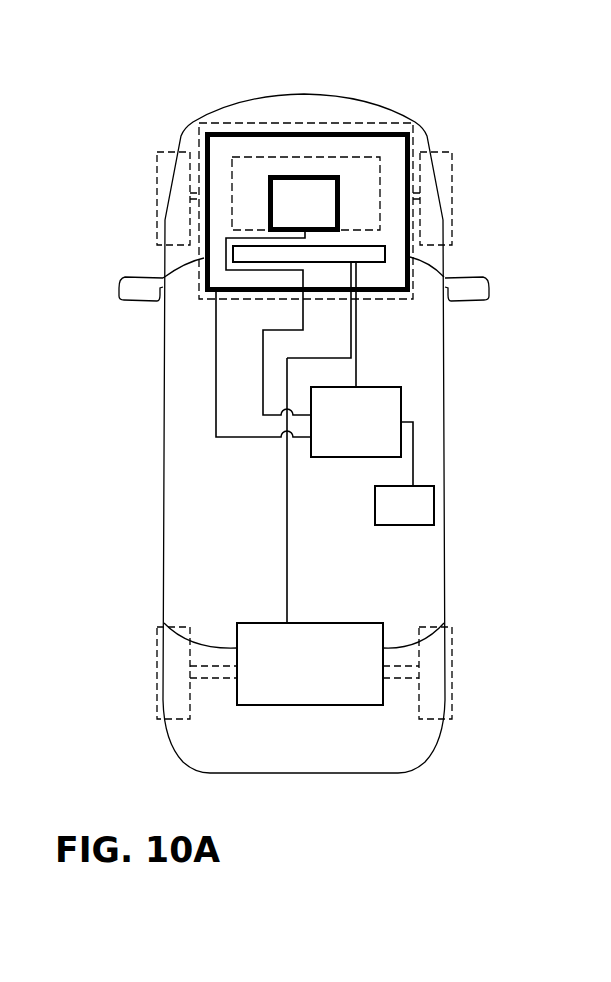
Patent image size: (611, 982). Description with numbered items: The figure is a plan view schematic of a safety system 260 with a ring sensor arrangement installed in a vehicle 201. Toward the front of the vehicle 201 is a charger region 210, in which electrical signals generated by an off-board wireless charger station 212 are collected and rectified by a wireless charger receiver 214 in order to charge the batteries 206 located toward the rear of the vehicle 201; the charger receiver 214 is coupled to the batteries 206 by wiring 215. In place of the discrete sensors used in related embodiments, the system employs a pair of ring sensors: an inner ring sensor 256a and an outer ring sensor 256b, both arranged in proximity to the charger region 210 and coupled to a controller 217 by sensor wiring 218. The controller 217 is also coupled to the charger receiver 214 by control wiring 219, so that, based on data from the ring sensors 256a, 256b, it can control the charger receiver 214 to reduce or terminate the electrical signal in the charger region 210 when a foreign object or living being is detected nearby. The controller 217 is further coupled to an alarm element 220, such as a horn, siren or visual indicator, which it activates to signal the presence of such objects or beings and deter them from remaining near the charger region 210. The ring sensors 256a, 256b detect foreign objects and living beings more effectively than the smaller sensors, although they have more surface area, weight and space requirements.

The safety system 260 is at (357, 419).
The vehicle 201 is at (445, 582).
The charger region 210 is at (378, 124).
The outer ring sensor 256b is at (204, 142).
The inner ring sensor 256a is at (285, 174).
The wireless charger station 212 is at (307, 158).
The wireless charger receiver 214 is at (386, 248).
The sensor wiring 218 is at (262, 363).
The control wiring 219 is at (358, 363).
The wiring 215 is at (287, 539).
The controller 217 is at (366, 437).
The alarm element 220 is at (418, 519).
The batteries 206 is at (335, 673).